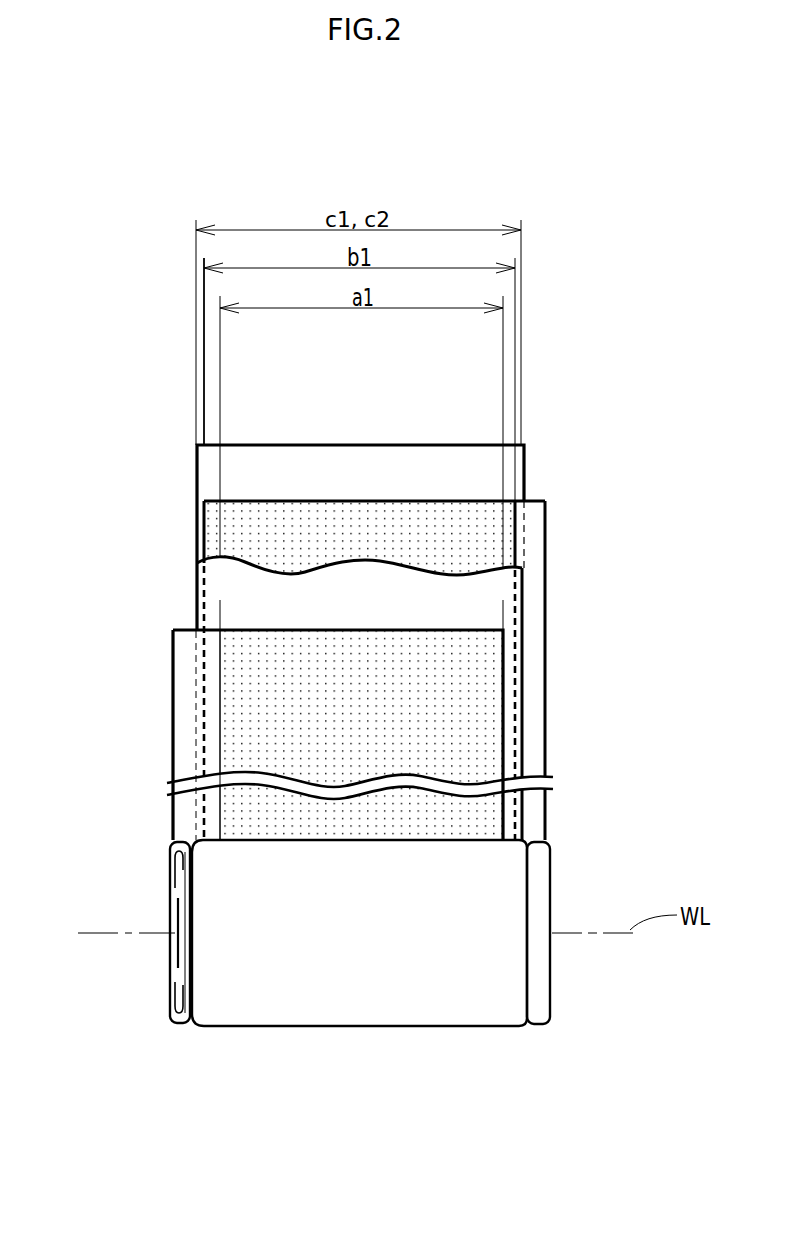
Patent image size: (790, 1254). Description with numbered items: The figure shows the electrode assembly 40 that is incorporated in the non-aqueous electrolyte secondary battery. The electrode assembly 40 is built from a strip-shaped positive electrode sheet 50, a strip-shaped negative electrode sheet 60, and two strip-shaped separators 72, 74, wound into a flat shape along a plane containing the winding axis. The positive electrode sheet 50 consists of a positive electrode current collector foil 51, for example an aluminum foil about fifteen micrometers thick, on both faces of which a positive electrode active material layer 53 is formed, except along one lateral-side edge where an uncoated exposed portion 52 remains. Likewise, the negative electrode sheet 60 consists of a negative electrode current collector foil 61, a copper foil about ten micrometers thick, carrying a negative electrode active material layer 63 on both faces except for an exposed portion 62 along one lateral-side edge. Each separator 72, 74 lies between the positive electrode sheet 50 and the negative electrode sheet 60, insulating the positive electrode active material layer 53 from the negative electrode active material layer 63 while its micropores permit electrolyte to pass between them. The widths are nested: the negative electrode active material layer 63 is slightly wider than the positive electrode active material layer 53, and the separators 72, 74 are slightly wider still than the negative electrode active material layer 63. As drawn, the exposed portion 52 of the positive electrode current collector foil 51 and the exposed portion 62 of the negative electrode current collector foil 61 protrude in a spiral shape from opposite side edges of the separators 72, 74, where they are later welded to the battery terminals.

The electrode assembly 40 is at (393, 1002).
The positive electrode sheet 50 is at (305, 799).
The positive electrode current collector foil 51 is at (347, 630).
The exposed portion 52 is at (187, 742).
The positive electrode active material layer 53 is at (250, 727).
The negative electrode sheet 60 is at (414, 723).
The negative electrode current collector foil 61 is at (347, 500).
The exposed portion 62 is at (532, 550).
The negative electrode active material layer 63 is at (450, 517).
The separator 72 is at (213, 473).
The separator 74 is at (213, 604).